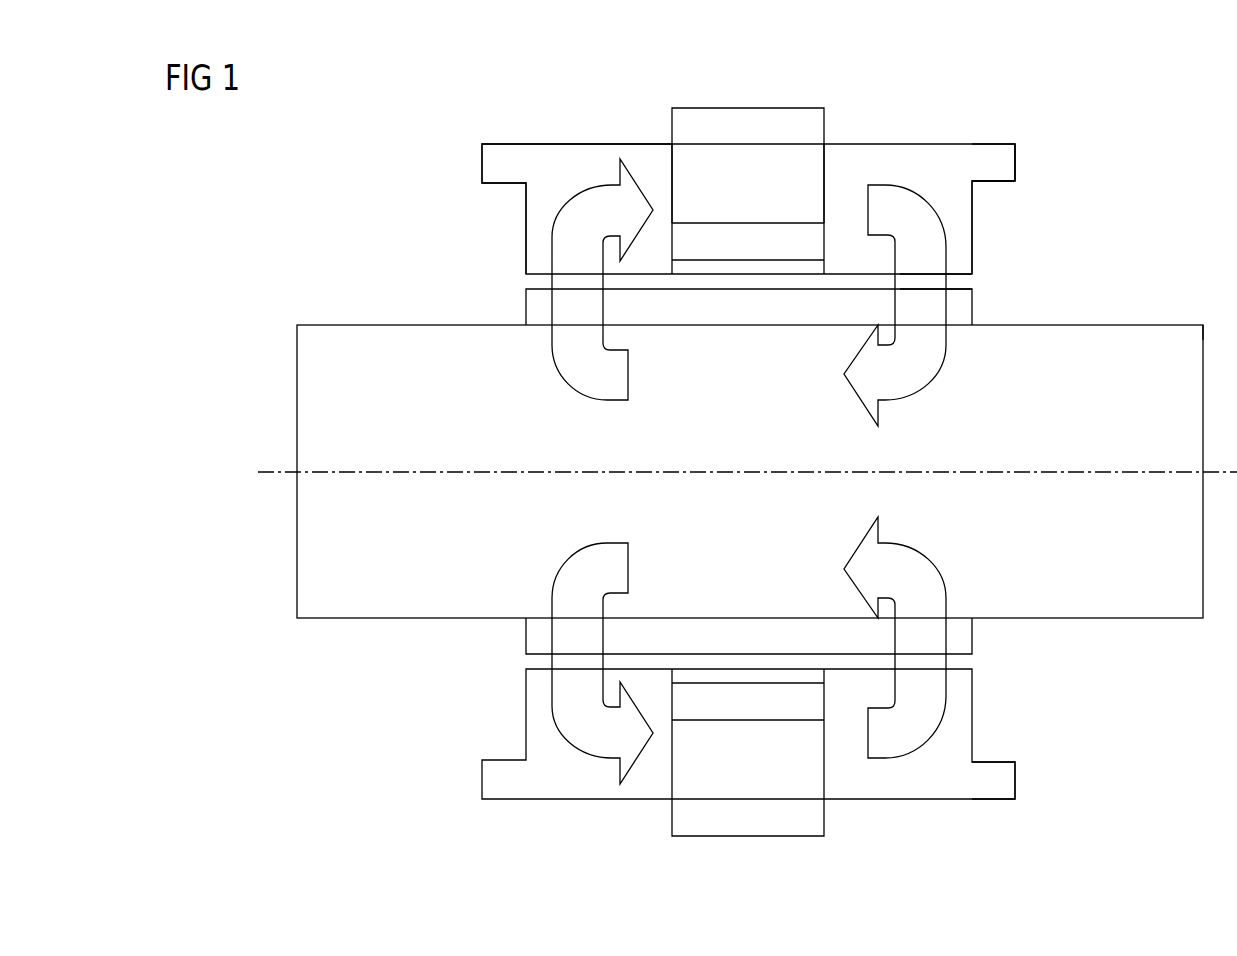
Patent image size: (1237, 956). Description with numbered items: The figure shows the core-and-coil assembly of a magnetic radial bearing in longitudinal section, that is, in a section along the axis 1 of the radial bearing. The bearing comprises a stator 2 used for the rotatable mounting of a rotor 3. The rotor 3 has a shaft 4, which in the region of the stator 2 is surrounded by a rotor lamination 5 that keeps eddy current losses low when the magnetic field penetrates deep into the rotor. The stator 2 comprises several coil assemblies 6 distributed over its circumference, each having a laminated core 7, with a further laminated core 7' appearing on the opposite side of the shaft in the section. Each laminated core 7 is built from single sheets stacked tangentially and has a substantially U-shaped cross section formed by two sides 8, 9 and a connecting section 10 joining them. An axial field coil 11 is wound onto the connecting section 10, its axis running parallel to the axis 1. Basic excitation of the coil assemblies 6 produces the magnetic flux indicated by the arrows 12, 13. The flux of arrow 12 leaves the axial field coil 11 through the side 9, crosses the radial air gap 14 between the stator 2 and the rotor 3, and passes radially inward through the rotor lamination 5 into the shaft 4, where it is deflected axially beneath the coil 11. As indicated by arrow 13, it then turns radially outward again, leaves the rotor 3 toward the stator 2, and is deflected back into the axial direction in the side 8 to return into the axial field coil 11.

The axis 1 is at (276, 472).
The stator 2 is at (1072, 216).
The rotor 3 is at (1185, 283).
The shaft 4 is at (1113, 342).
The rotor lamination 5 is at (962, 300).
The coil assembly 6 is at (957, 136).
The laminated core 7 is at (1018, 162).
The laminated core 7' is at (1022, 780).
The side 8 is at (537, 222).
The side 9 is at (962, 228).
The connecting section 10 is at (812, 161).
The axial field coil 11 is at (794, 101).
The arrow 12 is at (937, 372).
The arrow 13 is at (563, 375).
The radial air gap 14 is at (962, 284).